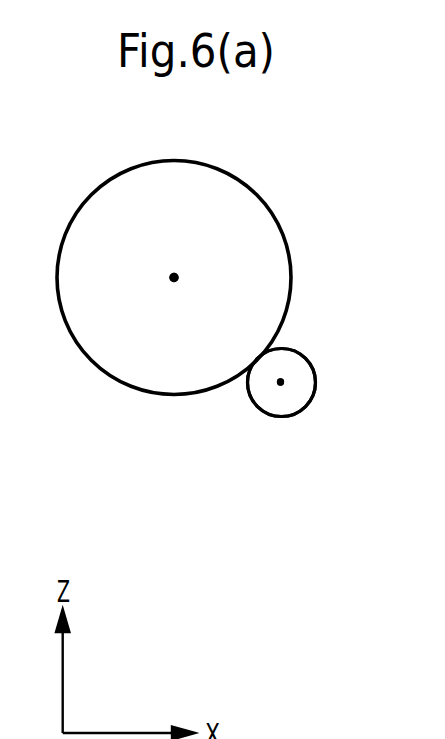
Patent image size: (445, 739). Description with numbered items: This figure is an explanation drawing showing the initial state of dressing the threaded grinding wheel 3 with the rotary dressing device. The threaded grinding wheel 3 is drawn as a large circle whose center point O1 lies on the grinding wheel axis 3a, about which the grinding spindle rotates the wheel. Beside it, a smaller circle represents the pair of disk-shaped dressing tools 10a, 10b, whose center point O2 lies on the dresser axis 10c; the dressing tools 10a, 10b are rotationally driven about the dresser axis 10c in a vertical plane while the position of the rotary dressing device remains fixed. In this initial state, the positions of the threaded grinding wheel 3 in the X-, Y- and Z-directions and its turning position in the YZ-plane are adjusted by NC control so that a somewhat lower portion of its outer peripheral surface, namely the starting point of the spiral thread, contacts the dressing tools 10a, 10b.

The threaded grinding wheel 3 is at (265, 243).
The grinding wheel axis 3a is at (174, 276).
The center point of glass substrate O1 is at (173, 277).
The dressing tool 10a is at (297, 397).
The dressing tool 10b is at (282, 383).
The dresser axis 10c is at (281, 383).
The center point of roller O2 is at (279, 382).